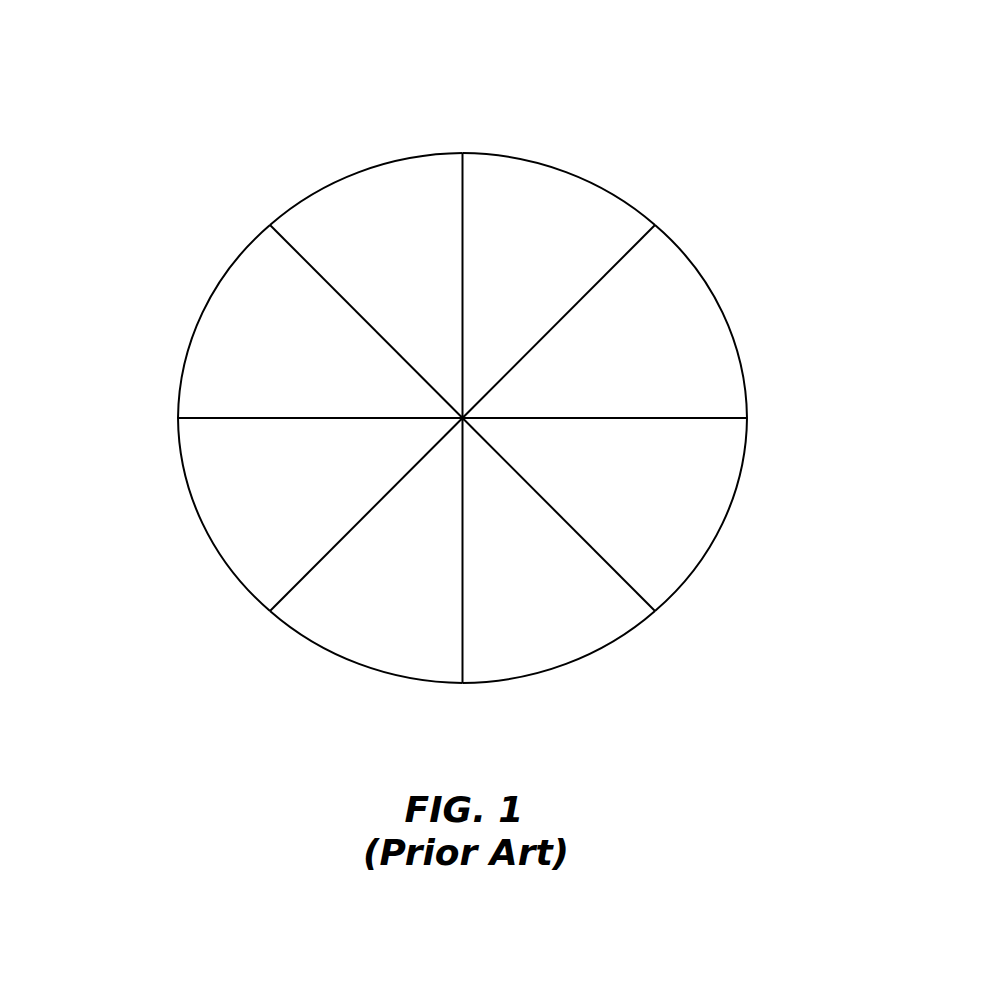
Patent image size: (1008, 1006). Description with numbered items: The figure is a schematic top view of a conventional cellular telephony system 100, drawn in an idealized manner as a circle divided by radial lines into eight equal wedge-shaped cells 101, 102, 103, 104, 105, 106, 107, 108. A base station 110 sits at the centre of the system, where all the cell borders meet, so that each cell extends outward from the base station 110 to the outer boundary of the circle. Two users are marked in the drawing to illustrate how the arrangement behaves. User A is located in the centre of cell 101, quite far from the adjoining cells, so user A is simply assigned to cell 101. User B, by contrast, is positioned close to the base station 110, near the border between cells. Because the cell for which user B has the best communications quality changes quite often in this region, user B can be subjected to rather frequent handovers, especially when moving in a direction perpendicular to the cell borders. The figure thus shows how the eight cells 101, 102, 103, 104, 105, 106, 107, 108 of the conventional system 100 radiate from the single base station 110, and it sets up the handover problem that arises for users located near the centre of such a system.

The system 100 is at (460, 350).
The cell 101 is at (535, 143).
The cell 102 is at (702, 245).
The cell 103 is at (751, 510).
The cell 104 is at (636, 650).
The cell 105 is at (289, 647).
The cell 106 is at (176, 500).
The cell 107 is at (203, 268).
The cell 108 is at (330, 161).
The base station 110 is at (438, 408).